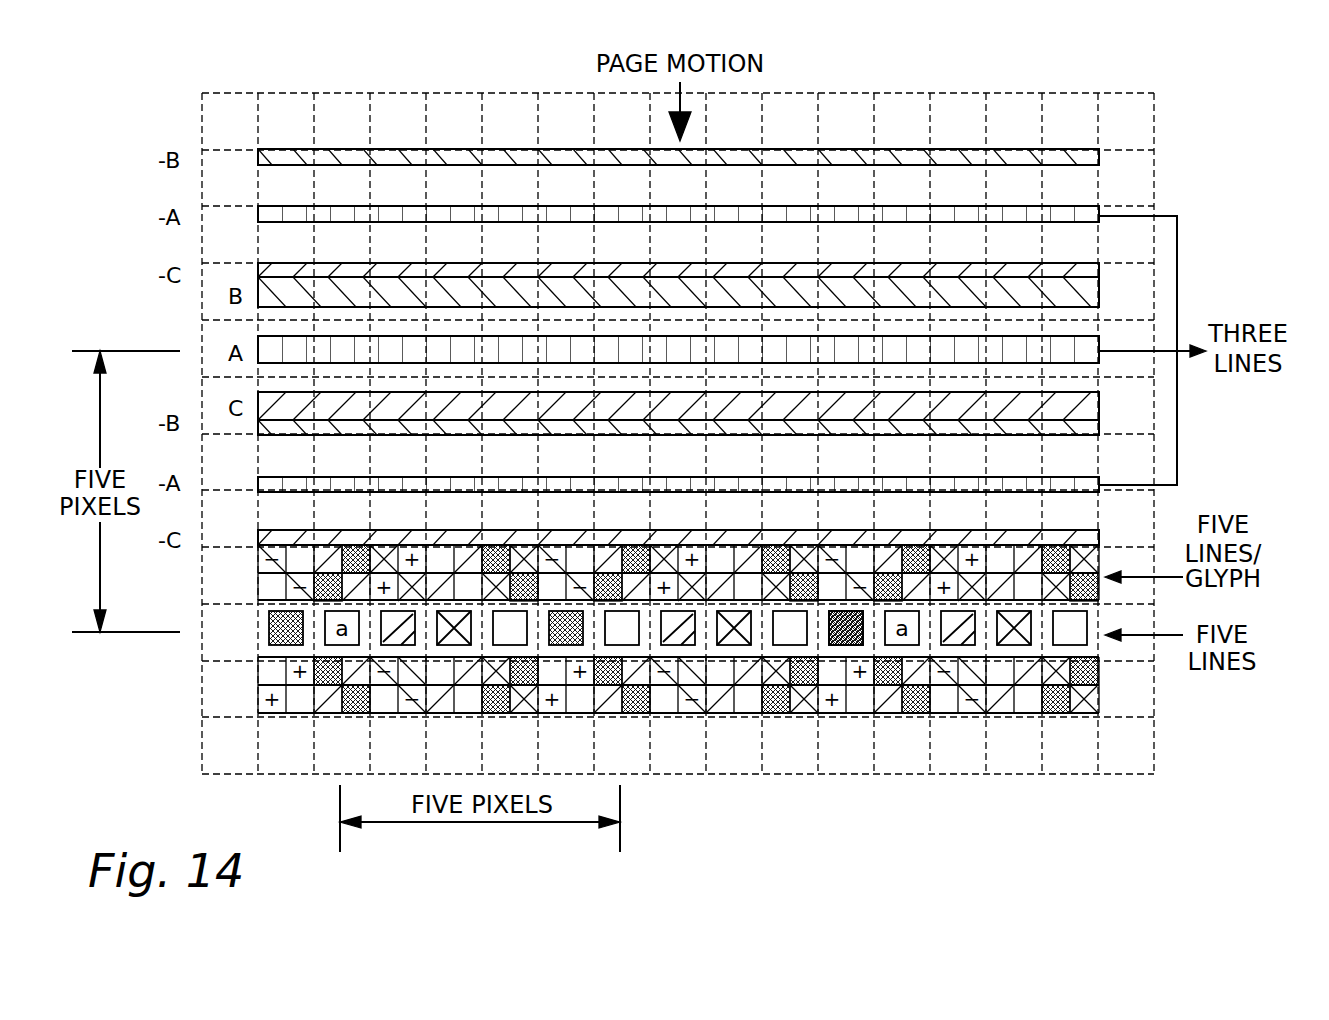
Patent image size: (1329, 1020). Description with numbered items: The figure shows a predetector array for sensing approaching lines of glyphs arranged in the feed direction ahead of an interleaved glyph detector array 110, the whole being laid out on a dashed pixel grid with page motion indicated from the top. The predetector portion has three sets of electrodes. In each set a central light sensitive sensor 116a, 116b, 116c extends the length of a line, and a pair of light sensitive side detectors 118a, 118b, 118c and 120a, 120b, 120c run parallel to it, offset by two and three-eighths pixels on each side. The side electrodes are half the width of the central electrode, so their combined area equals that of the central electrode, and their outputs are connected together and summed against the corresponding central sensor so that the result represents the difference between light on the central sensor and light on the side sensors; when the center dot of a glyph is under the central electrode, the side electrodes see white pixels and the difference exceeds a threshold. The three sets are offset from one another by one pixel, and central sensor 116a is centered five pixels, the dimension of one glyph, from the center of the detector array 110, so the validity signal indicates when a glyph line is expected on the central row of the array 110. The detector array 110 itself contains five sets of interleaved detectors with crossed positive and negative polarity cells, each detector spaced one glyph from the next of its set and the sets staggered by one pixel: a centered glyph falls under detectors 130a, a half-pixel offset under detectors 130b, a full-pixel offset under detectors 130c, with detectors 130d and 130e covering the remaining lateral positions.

The detector array 110 is at (793, 694).
The central light sensitive sensor 116a is at (1100, 343).
The central light sensitive sensor 116b is at (1100, 290).
The central light sensitive sensor 116c is at (1100, 405).
The light sensitive side detector 118a is at (300, 210).
The light sensitive side detector 118b is at (288, 158).
The light sensitive side detector 118c is at (291, 268).
The light sensitive side detector 120a is at (1070, 480).
The light sensitive side detector 120b is at (1100, 428).
The light sensitive side detector 120c is at (288, 545).
The detectors 130a is at (636, 641).
The detectors 130b is at (694, 645).
The detectors 130c is at (736, 645).
The detectors 130d is at (795, 640).
The detectors 130e is at (852, 645).